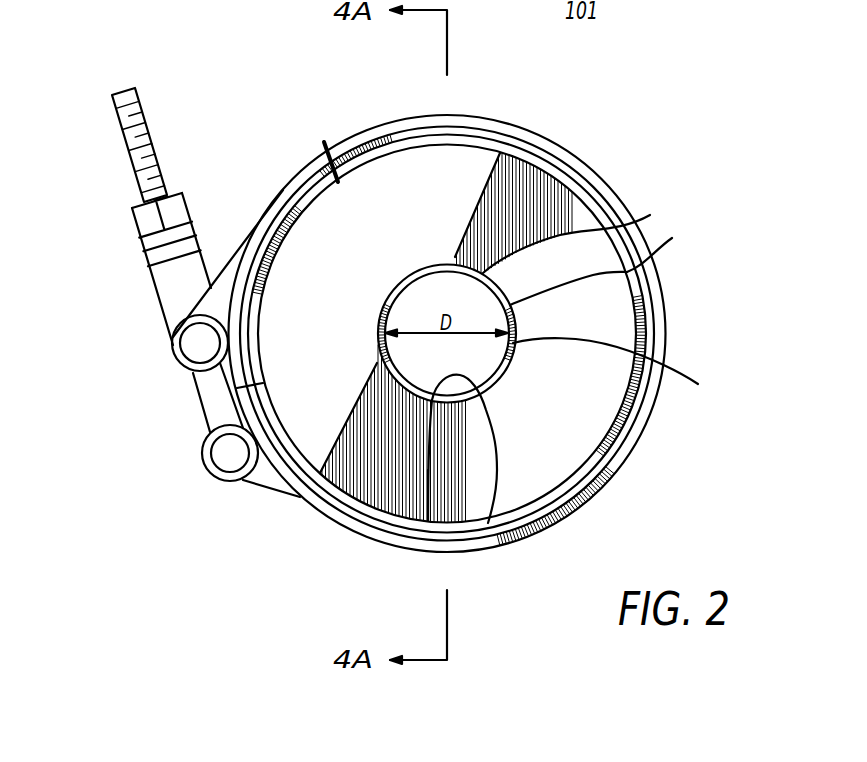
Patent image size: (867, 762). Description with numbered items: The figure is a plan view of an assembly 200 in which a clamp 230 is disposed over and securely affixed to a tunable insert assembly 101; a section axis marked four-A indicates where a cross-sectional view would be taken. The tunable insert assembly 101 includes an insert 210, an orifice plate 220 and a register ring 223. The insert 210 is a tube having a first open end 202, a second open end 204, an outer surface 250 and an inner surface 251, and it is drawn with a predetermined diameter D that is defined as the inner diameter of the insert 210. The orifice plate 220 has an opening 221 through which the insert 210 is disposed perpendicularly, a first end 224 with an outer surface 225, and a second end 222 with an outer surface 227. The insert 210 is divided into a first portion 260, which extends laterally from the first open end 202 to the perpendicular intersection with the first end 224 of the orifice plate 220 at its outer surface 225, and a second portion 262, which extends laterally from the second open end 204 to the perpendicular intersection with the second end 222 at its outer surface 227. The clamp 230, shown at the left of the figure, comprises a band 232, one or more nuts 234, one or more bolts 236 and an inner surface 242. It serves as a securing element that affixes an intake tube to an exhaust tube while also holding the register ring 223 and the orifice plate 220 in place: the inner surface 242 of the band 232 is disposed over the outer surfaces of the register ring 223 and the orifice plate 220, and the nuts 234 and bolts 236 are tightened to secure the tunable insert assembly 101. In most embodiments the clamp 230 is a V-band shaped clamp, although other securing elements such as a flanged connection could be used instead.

The tunable insert assembly 101 is at (340, 245).
The assembly 200 is at (628, 128).
The first open end 202 is at (430, 363).
The second open end 204 is at (650, 215).
The insert 210 is at (627, 272).
The orifice plate 220 is at (630, 410).
The opening 221 is at (375, 305).
The second end 222 is at (672, 238).
The register ring 223 is at (657, 322).
The first end 224 is at (425, 265).
The outer surface of the first end 225 is at (470, 185).
The outer surface of the second end 227 is at (573, 210).
The clamp 230 is at (213, 307).
The band 232 is at (330, 510).
The nuts 234 is at (172, 280).
The bolts 236 is at (210, 460).
The inner surface 242 is at (503, 520).
The outer surface 250 is at (488, 523).
The inner surface 251 is at (428, 520).
The first portion 260 is at (347, 137).
The second portion 262 is at (698, 384).